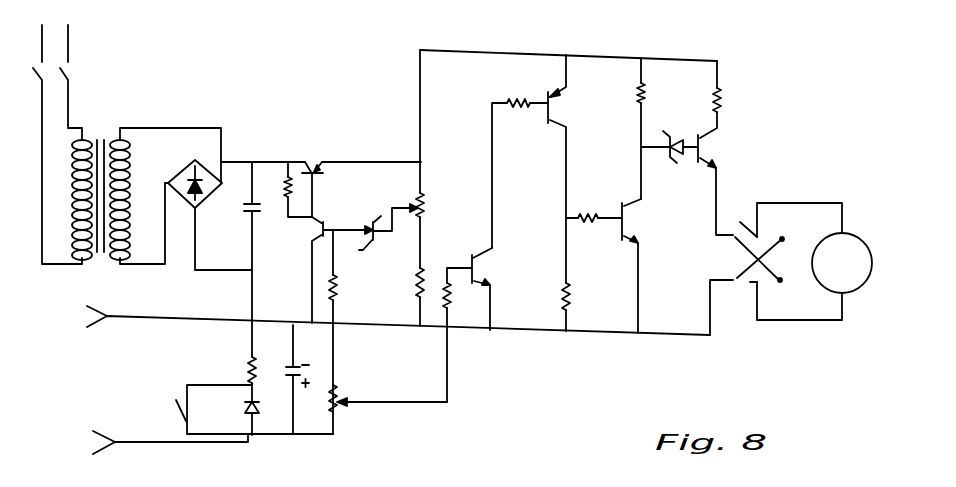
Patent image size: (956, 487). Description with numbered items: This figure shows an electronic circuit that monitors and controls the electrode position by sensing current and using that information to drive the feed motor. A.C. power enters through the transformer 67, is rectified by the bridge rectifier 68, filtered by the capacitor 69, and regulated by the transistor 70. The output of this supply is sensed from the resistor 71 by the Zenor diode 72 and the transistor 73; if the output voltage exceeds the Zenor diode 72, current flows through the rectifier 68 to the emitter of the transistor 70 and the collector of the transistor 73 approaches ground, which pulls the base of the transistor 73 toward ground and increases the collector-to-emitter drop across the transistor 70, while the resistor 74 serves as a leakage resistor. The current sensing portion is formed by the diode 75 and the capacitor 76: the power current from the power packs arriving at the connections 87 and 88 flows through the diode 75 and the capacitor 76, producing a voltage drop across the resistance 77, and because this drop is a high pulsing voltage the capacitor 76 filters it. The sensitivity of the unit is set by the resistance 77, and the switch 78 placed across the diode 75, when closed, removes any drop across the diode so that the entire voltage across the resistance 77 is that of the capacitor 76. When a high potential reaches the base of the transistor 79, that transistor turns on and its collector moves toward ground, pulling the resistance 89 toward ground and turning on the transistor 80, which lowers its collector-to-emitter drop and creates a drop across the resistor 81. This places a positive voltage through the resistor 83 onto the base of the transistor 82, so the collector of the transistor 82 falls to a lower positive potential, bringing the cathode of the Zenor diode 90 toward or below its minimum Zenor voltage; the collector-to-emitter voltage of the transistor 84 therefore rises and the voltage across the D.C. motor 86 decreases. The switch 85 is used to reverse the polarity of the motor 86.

The transformer 67 is at (101, 169).
The bridge rectifier 68 is at (191, 170).
The capacitor 69 is at (239, 241).
The transistor 70 is at (326, 164).
The resistor 71 is at (437, 188).
The Zenor diode 72 is at (386, 219).
The transistor 73 is at (322, 242).
The leakage resistor 74 is at (352, 307).
The diode 75 is at (260, 377).
The capacitor 76 is at (286, 379).
The resistance 77 is at (388, 399).
The switch 78 is at (162, 415).
The transistor 79 is at (484, 324).
The transistor 80 is at (580, 136).
The resistor 81 is at (583, 274).
The transistor 82 is at (651, 266).
The resistor 83 is at (594, 199).
The transistor 84 is at (733, 148).
The polarity reversing switch 85 is at (778, 266).
The D.C. motor 86 is at (821, 261).
The power pack connection 87 is at (398, 311).
The power pack connection 88 is at (170, 452).
The resistance 89 is at (512, 152).
The Zenor diode 90 is at (678, 137).